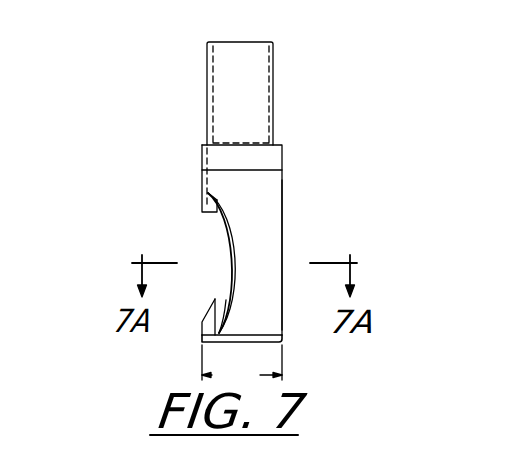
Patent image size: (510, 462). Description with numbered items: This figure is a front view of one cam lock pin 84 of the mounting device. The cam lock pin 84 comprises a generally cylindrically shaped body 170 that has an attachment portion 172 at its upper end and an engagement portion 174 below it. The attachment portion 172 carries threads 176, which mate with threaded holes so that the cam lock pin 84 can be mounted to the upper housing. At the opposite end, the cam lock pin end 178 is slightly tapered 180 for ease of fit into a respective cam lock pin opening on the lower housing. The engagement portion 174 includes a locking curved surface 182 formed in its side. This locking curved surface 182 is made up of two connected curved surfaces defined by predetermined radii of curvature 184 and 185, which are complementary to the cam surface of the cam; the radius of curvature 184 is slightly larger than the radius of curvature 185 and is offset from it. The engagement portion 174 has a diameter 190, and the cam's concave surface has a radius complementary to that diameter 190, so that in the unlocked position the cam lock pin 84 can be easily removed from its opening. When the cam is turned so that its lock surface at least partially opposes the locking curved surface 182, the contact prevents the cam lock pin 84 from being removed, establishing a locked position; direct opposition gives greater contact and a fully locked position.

The cam lock pin 84 is at (147, 126).
The body 170 is at (282, 203).
The attachment portion 172 is at (267, 82).
The engagement portion 174 is at (268, 228).
The threads 176 is at (268, 105).
The cam lock pin end 178 is at (257, 343).
The taper 180 is at (282, 338).
The locking curved surface 182 is at (224, 284).
The radius of curvature 184 is at (207, 265).
The radius of curvature 185 is at (215, 227).
The diameter 190 is at (242, 370).